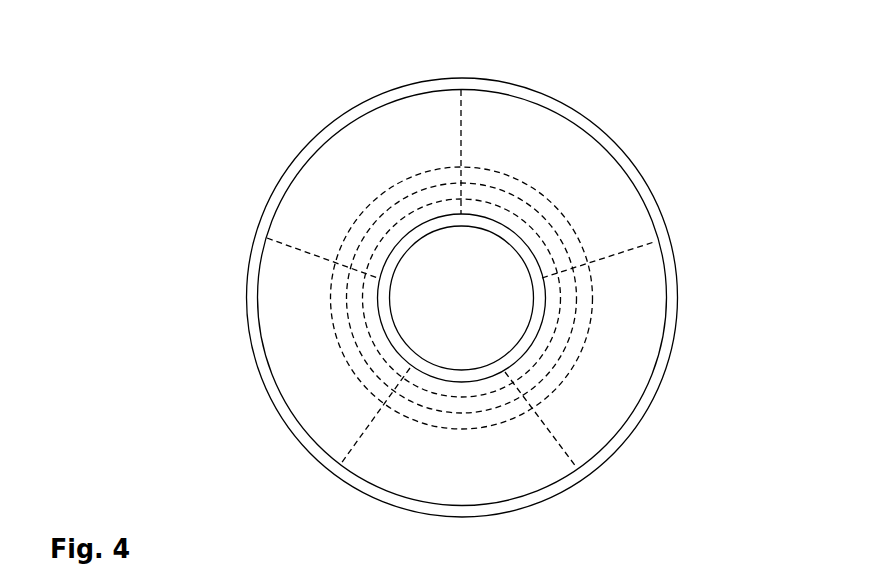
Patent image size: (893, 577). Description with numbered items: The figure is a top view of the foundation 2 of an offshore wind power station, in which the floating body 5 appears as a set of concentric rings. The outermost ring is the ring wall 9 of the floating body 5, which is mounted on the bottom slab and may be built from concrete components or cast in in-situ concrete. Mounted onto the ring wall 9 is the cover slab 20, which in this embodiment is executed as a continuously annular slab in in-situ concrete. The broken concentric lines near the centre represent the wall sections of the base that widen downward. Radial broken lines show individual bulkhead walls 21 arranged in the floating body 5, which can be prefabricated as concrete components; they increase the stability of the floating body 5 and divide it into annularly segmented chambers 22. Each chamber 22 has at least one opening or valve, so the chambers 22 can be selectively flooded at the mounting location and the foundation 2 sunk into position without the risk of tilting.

The foundation 2 is at (573, 92).
The floating body 5 is at (410, 127).
The ring wall 9 is at (312, 148).
The cover slab 20 is at (590, 200).
The bulkhead walls 21 is at (552, 433).
The chambers 22 is at (287, 340).